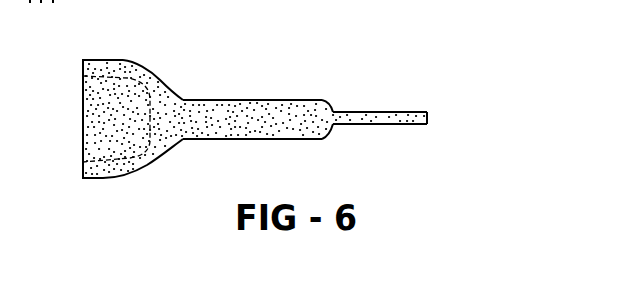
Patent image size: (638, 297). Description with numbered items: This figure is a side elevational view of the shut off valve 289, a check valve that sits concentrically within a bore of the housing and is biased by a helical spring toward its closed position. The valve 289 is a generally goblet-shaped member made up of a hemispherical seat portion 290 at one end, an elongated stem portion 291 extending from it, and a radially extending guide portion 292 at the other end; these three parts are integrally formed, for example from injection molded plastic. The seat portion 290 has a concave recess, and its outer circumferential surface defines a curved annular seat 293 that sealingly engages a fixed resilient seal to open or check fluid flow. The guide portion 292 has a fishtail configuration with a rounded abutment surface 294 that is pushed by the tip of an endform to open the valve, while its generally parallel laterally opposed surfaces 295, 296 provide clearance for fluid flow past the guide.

The shut off valve 289 is at (187, 149).
The seat portion 290 is at (100, 178).
The stem portion 291 is at (278, 100).
The guide portion 292 is at (359, 111).
The curved annular seat 293 is at (152, 74).
The abutment surface 294 is at (428, 117).
The laterally opposed surface 295 is at (387, 111).
The bottom surface of distal tip 296 is at (390, 125).